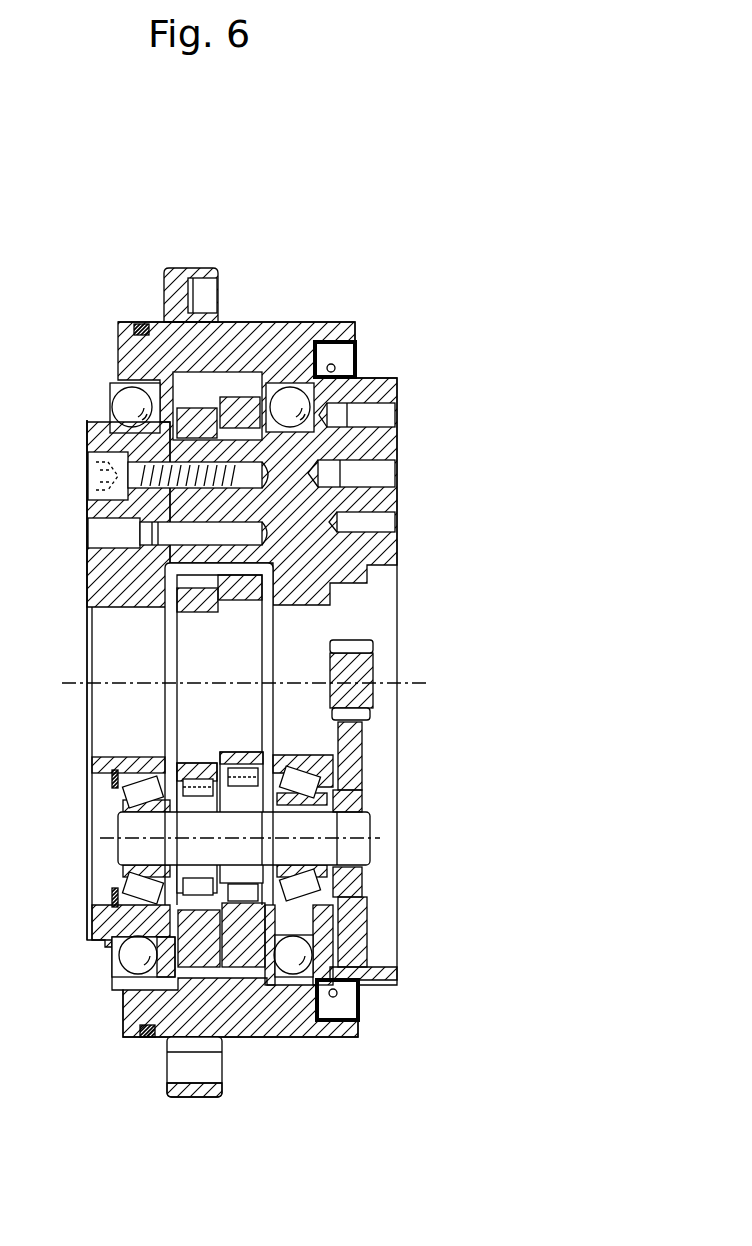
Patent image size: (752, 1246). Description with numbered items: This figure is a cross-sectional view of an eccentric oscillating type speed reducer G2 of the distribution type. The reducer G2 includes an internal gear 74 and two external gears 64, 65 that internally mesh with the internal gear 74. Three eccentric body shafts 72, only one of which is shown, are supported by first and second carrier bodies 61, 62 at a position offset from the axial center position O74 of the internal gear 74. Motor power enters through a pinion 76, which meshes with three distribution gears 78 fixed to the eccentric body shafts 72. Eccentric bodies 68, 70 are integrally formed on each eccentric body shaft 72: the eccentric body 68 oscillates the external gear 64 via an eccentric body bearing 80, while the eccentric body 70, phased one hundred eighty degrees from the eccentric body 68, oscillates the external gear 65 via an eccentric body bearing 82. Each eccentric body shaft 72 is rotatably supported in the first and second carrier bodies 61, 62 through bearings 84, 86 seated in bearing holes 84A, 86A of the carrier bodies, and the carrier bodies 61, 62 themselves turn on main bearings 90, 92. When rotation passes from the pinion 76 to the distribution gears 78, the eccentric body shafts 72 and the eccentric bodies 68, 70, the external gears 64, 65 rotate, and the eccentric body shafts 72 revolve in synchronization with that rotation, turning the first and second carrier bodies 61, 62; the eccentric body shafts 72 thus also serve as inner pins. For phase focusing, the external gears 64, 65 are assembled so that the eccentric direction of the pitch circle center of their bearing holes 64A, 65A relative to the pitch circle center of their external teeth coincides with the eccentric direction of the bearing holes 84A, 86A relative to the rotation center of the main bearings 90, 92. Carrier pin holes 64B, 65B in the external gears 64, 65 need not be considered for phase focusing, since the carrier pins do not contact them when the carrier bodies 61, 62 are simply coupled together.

The eccentric oscillating type speed reducer G2 is at (413, 284).
The first carrier body 61 is at (98, 437).
The second carrier body 62 is at (382, 440).
The external gear 64 is at (172, 1010).
The bearing hole 64A is at (112, 957).
The carrier pin hole 64B is at (193, 440).
The external gear 65 is at (243, 947).
The bearing hole 65A is at (300, 975).
The carrier pin hole 65B is at (236, 433).
The eccentric body 68 is at (202, 803).
The eccentric body 70 is at (244, 788).
The eccentric body shaft 72 is at (327, 822).
The internal gear 74 is at (218, 383).
The pinion 76 is at (357, 640).
The distribution gear 78 is at (357, 925).
The eccentric body bearing 80 is at (110, 800).
The eccentric body bearing 82 is at (285, 737).
The bearing 84 is at (110, 875).
The bearing hole 84A is at (112, 893).
The bearing 86 is at (350, 888).
The bearing hole 86A is at (317, 803).
The main bearing 90 is at (127, 405).
The main bearing 92 is at (296, 408).
The axial center position of the internal gear O74 is at (428, 685).